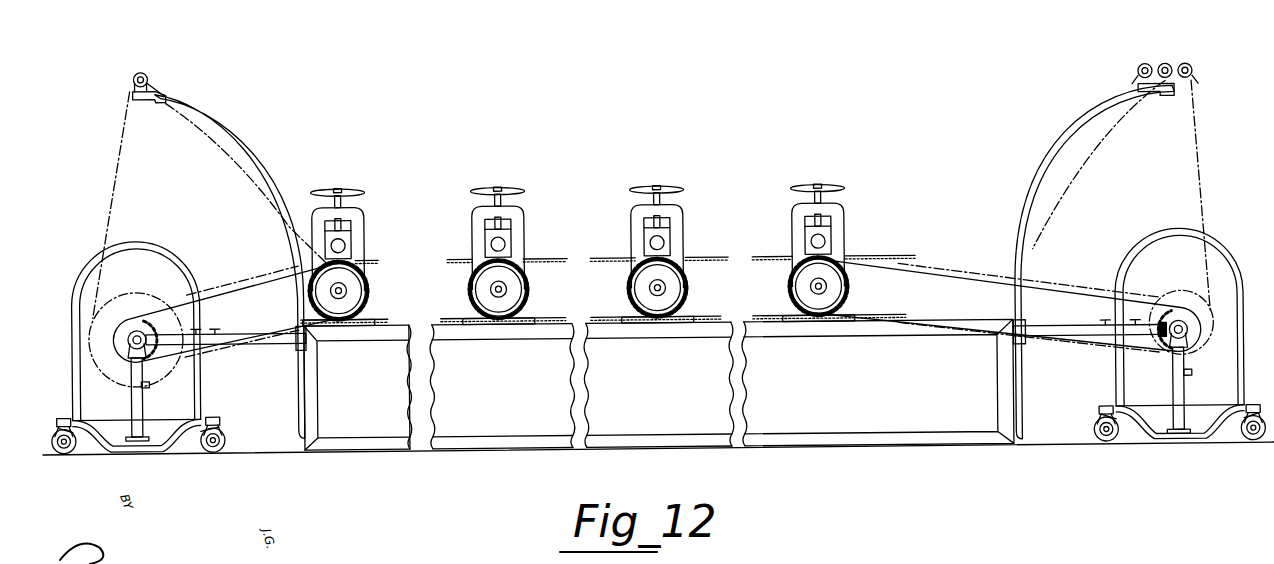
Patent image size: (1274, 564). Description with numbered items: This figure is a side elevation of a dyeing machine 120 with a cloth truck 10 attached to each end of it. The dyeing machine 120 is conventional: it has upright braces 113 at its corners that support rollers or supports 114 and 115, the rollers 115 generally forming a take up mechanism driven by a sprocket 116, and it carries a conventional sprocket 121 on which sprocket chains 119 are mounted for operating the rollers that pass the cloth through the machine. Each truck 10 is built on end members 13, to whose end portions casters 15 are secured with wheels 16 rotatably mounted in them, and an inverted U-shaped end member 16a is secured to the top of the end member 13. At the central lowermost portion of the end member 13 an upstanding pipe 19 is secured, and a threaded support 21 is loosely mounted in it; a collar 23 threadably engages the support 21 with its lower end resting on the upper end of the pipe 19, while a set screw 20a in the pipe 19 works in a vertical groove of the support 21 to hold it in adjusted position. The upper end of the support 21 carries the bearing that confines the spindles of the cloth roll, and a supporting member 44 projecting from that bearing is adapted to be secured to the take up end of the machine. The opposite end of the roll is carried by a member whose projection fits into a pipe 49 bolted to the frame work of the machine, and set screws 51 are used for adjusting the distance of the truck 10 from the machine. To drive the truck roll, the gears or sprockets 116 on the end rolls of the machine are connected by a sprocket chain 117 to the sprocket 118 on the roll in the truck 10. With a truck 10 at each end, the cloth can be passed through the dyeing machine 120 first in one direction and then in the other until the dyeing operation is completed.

The truck 10 is at (154, 239).
The end member 13 is at (161, 424).
The caster 15 is at (79, 428).
The wheel 16 is at (61, 422).
The inverted U-shaped end member 16a is at (179, 256).
The upstanding pipe 19 is at (131, 412).
The set screw 20a is at (157, 389).
The threaded support 21 is at (121, 347).
The collar 23 is at (133, 358).
The supporting member 44 is at (157, 328).
The pipe 49 is at (253, 344).
The set screw 51 is at (209, 326).
The upright brace 113 is at (239, 140).
The roller 114 is at (1192, 71).
The roller 115 is at (151, 76).
The sprocket 116 is at (350, 280).
The sprocket chain 117 is at (237, 290).
The sprocket 118 is at (117, 322).
The sprocket chain 119 is at (450, 259).
The dyeing machine 120 is at (659, 384).
The sprocket 121 is at (370, 299).